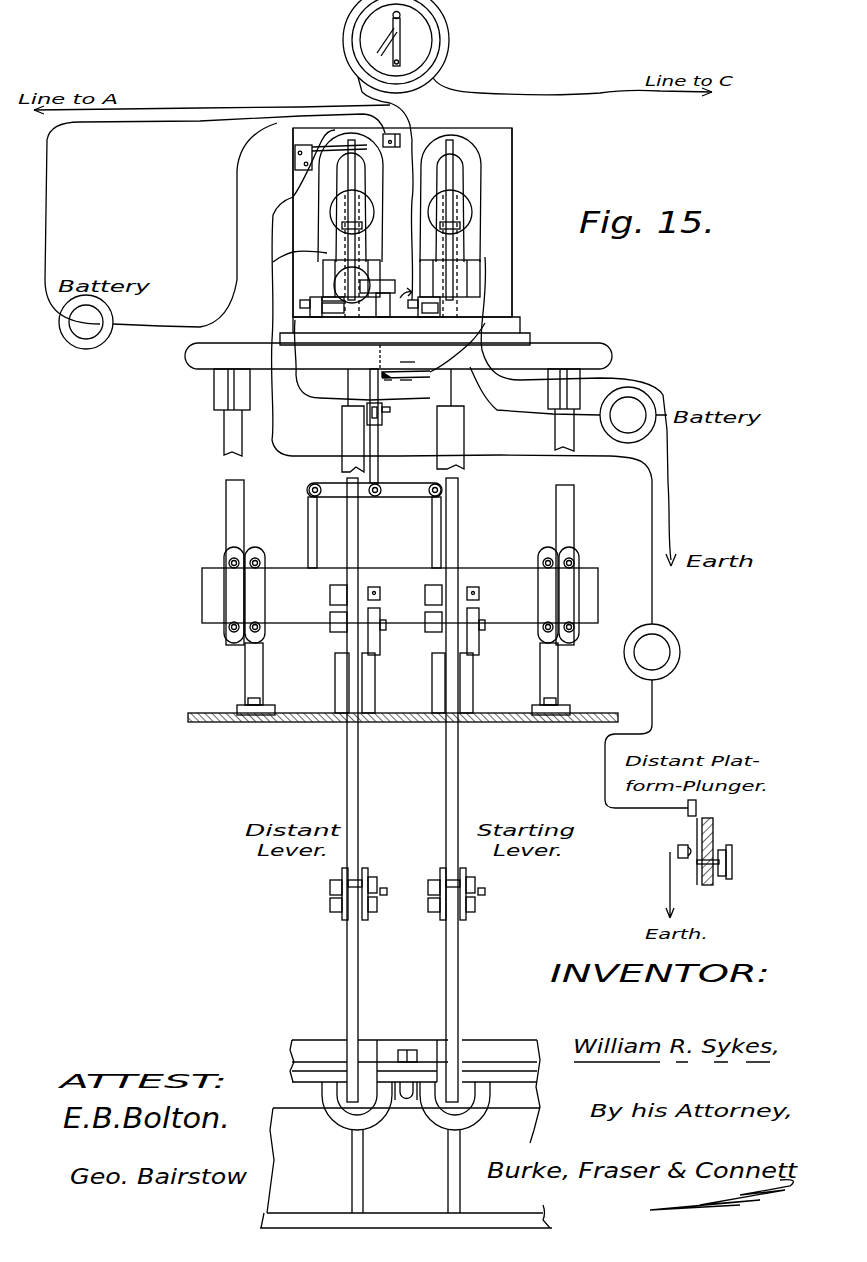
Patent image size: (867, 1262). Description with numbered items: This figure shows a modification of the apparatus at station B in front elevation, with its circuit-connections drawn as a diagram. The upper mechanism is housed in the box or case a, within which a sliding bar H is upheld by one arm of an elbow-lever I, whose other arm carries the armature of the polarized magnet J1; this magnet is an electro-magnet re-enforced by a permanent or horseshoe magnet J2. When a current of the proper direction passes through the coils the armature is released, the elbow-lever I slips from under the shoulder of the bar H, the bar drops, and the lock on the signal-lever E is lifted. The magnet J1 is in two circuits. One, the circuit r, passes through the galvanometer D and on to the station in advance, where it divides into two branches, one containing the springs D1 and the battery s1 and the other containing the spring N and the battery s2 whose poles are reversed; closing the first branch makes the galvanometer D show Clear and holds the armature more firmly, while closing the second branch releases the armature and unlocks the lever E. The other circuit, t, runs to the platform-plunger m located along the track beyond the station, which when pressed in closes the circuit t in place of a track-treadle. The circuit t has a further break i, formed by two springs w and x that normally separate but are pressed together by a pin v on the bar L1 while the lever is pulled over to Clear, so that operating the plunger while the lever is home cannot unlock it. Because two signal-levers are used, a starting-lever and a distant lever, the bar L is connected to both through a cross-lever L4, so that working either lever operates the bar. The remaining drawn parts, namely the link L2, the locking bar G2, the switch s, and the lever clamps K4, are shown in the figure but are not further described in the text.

The station B is at (306, 90).
The galvanometer D is at (396, 46).
The springs D' D1 is at (347, 148).
The bar L is at (355, 172).
The box or case a is at (410, 222).
The permanent or horseshoe magnet J2 is at (348, 243).
The polarized magnet J1 is at (349, 292).
The elbow-lever I is at (322, 307).
The spring N is at (439, 227).
The pin v is at (384, 352).
The spring w is at (413, 359).
The break i is at (387, 387).
The spring x is at (406, 387).
The circuit t is at (499, 644).
The sliding bar H is at (347, 424).
The signal-lever E is at (414, 590).
The bar L' L1 is at (383, 426).
The cross-lever L4 is at (374, 525).
The link L2 is at (423, 532).
The locking bar G2 is at (400, 597).
The battery s' s1 is at (86, 322).
The battery s² s2 is at (628, 415).
The switch s is at (652, 652).
The lever clamp K4 is at (414, 895).
The platform-plunger m is at (714, 851).
The circuit r is at (215, 220).